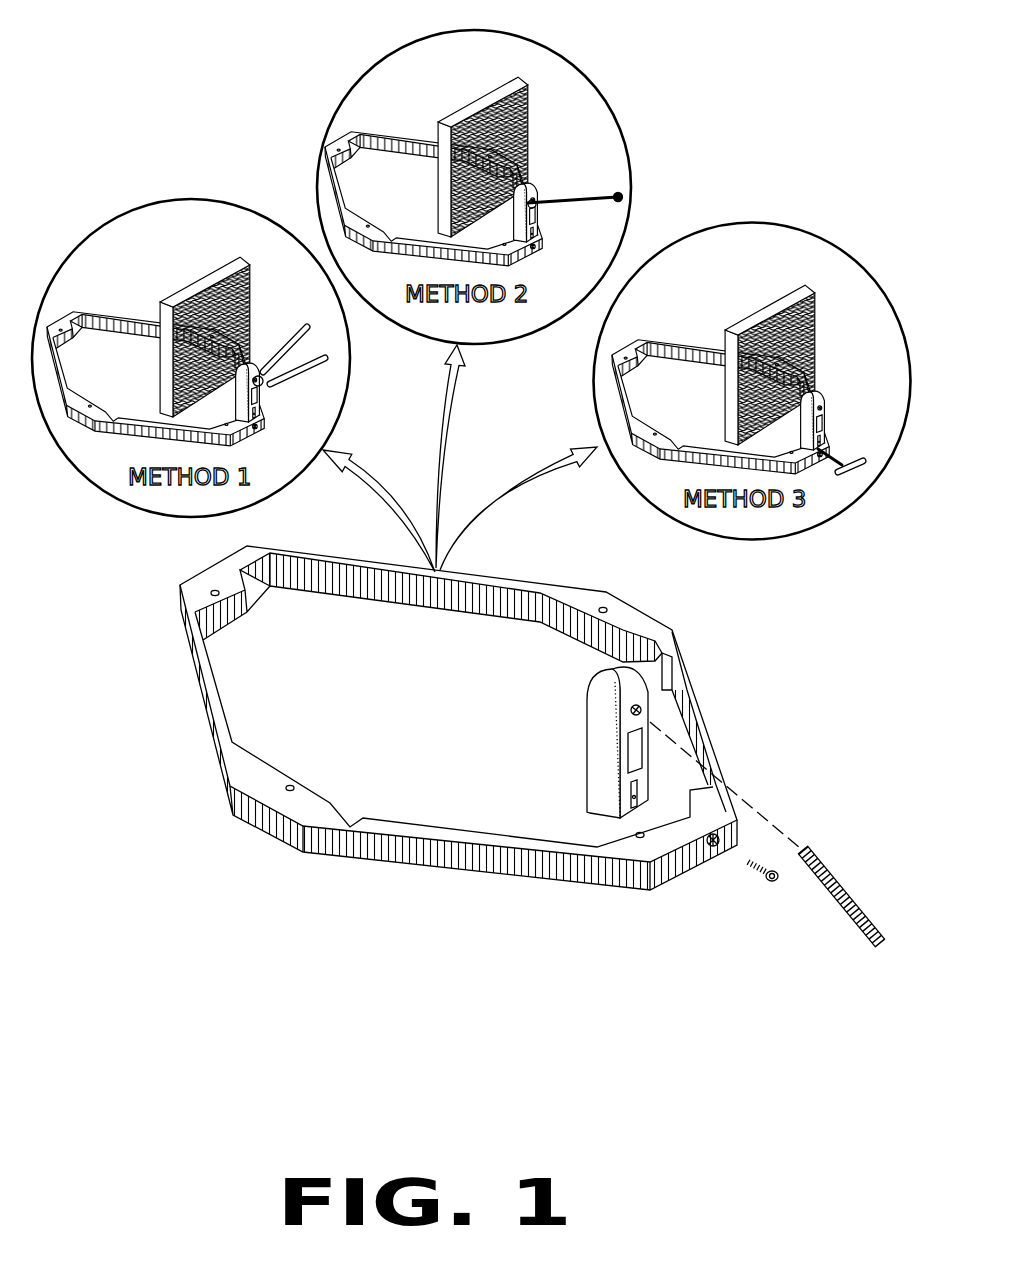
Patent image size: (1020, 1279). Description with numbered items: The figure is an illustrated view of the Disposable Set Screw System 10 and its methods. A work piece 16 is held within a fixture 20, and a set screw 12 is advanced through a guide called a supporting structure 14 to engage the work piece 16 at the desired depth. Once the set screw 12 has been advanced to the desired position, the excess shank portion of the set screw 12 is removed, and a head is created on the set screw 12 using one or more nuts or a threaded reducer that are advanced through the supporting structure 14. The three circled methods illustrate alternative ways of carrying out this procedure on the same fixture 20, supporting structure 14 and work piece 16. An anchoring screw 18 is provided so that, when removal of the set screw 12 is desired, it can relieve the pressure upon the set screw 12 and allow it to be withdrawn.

The Disposable Set Screw System 10 is at (748, 652).
The set screw 12 is at (840, 903).
The supporting structure 14 is at (589, 754).
The work piece 16 is at (217, 277).
The anchoring screw 18 is at (748, 866).
The fixture 20 is at (600, 886).